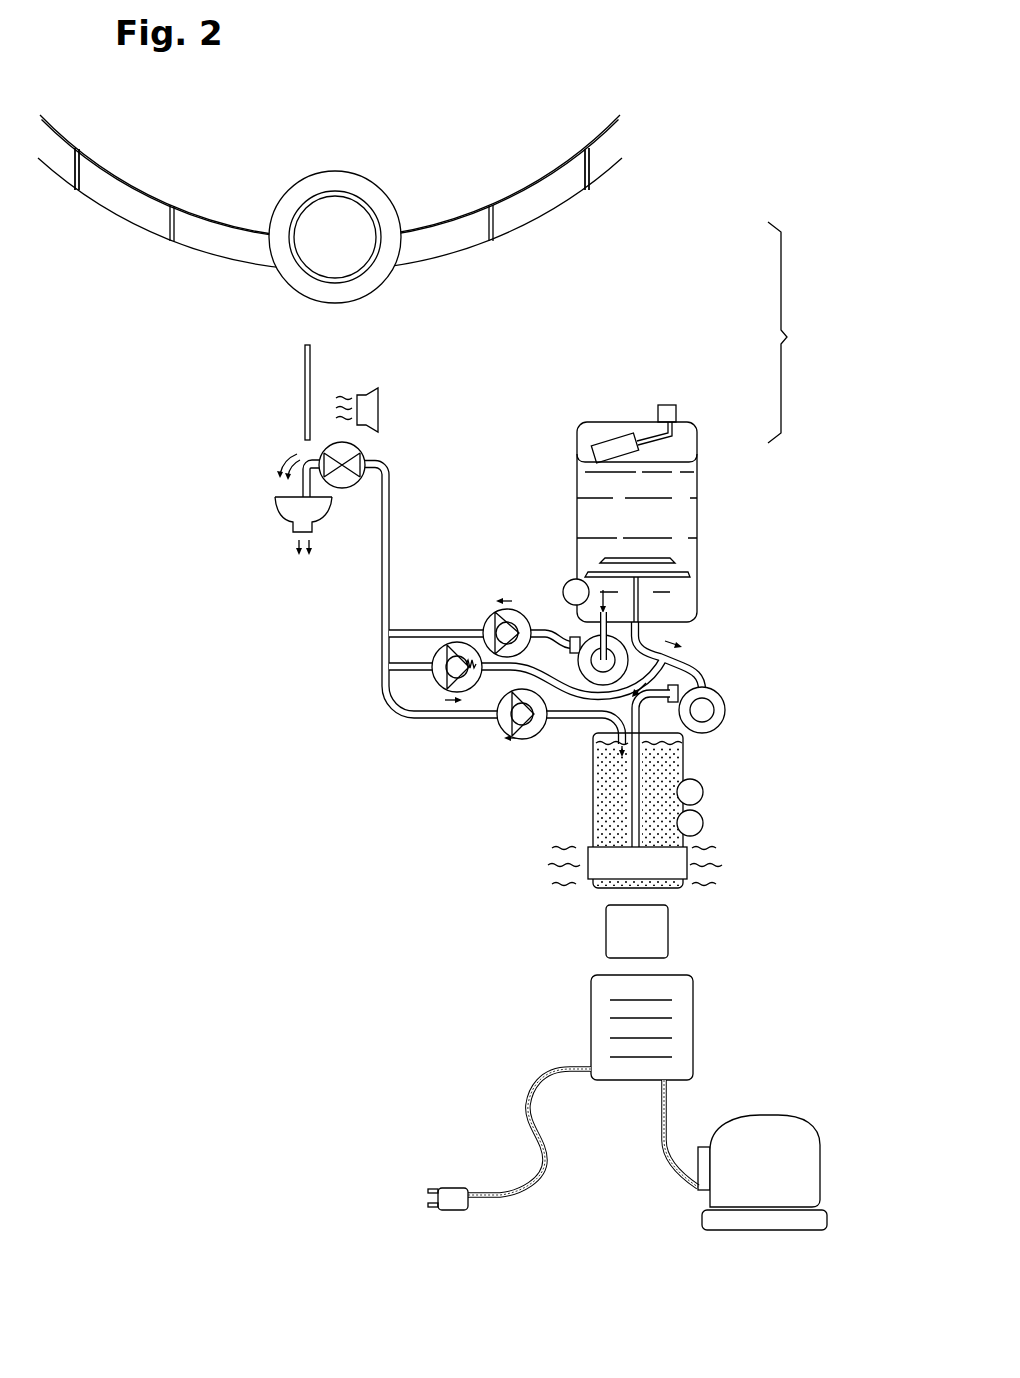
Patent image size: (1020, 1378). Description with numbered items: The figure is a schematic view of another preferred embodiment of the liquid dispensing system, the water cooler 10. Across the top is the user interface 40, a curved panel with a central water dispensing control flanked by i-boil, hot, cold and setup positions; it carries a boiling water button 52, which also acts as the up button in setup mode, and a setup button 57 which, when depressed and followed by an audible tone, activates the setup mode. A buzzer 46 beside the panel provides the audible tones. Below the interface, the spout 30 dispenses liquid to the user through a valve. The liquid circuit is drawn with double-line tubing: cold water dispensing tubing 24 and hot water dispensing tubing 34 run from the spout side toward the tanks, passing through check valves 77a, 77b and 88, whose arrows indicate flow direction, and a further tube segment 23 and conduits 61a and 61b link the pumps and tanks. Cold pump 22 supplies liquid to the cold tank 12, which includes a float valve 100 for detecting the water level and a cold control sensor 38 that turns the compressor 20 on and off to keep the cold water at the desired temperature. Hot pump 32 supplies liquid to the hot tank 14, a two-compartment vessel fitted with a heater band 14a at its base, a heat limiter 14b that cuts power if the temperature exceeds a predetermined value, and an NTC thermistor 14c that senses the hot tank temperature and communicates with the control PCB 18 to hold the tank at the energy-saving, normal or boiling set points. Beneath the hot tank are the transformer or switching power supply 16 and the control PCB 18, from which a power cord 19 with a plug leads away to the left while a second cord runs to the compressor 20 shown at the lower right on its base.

The water cooler system 10 is at (789, 336).
The cold tank 12 is at (677, 490).
The hot tank 14 is at (655, 791).
The heater band 14a is at (678, 861).
The heat limiter 14b is at (704, 822).
The NTC thermistor 14c is at (704, 790).
The power supply 16 is at (626, 944).
The control PCB 18 is at (598, 1026).
The power cord 19 is at (537, 1143).
The compressor 20 is at (752, 1179).
The cold water pump 22 is at (622, 647).
The conduit 23 is at (403, 672).
The cold water dispensing tubing 24 is at (403, 628).
The spout 30 is at (280, 513).
The hot water pump 32 is at (721, 695).
The hot water dispensing tubing 34 is at (402, 719).
The cold control sensor 38 is at (565, 586).
The interface 40 is at (420, 136).
The buzzer 46 is at (375, 390).
The boiling water button 52 is at (113, 197).
The setup button 57 is at (532, 197).
The conduit 61a is at (692, 660).
The heating chamber compartment 61b is at (622, 798).
The check valve 77a is at (506, 737).
The check valve 77b is at (532, 610).
The check valve 88 is at (441, 647).
The float system 100 is at (668, 404).